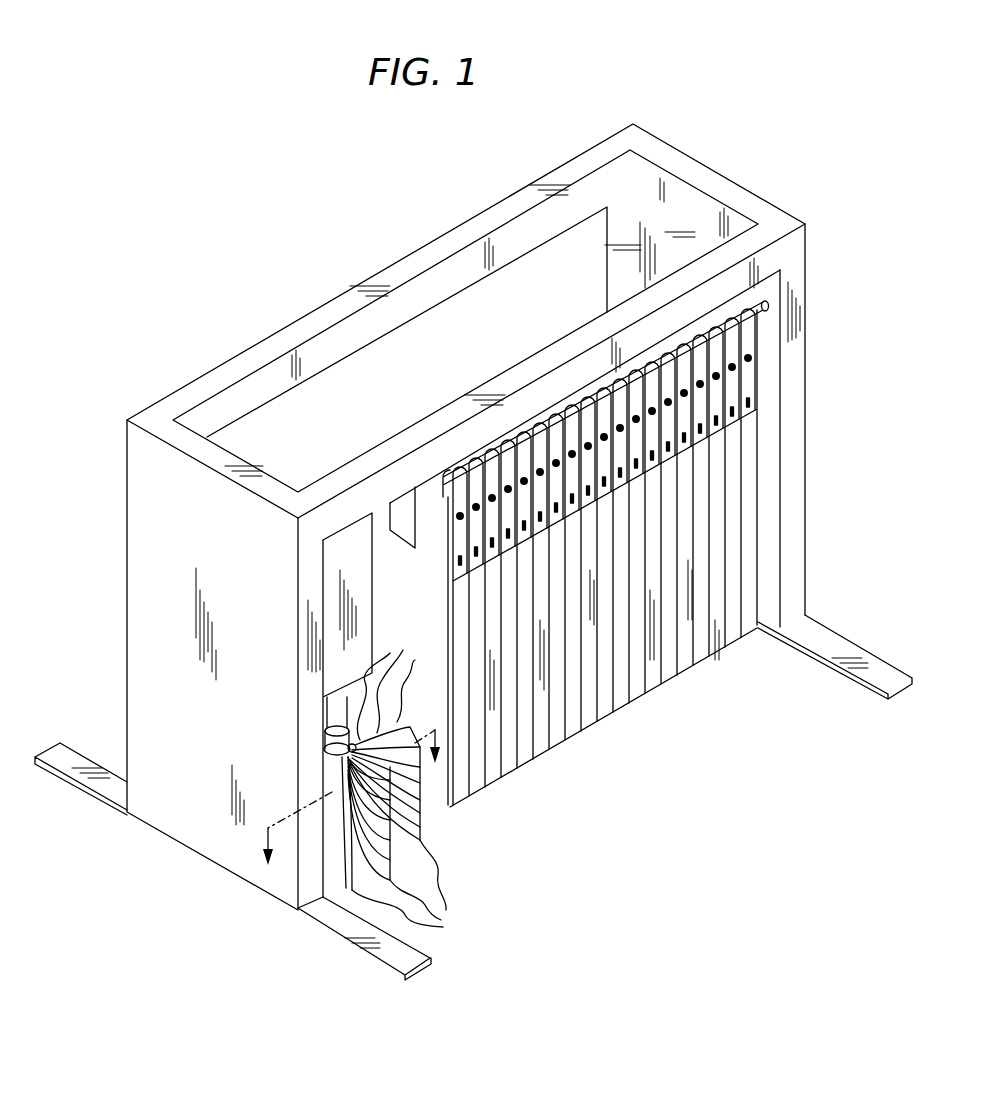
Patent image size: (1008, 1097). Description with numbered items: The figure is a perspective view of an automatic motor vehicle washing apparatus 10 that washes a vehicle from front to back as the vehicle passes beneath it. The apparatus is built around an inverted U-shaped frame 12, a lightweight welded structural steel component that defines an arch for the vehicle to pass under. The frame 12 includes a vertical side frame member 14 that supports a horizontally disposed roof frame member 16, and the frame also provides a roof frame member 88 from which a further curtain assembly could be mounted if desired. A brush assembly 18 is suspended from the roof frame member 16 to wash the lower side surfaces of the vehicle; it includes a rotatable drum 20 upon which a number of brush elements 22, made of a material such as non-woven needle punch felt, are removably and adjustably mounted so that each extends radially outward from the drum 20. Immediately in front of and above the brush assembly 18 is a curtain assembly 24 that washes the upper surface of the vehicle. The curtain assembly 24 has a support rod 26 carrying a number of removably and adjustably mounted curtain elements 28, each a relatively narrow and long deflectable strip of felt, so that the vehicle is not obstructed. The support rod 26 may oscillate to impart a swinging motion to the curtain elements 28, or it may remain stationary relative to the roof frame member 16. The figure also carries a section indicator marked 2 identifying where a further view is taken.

The automatic motor vehicle washing apparatus 10 is at (272, 298).
The inverted U-shaped frame 12 is at (814, 406).
The vertical side frame member 14 is at (138, 553).
The roof frame member 16 is at (778, 222).
The roof frame member 88 is at (580, 165).
The brush assembly 18 is at (442, 850).
The rotatable drum 20 is at (332, 748).
The brush elements 22 is at (404, 789).
The curtain assembly 24 is at (675, 688).
The support rod 26 is at (768, 310).
The curtain elements 28 is at (753, 580).
The section line for FIG. 2 is at (354, 814).